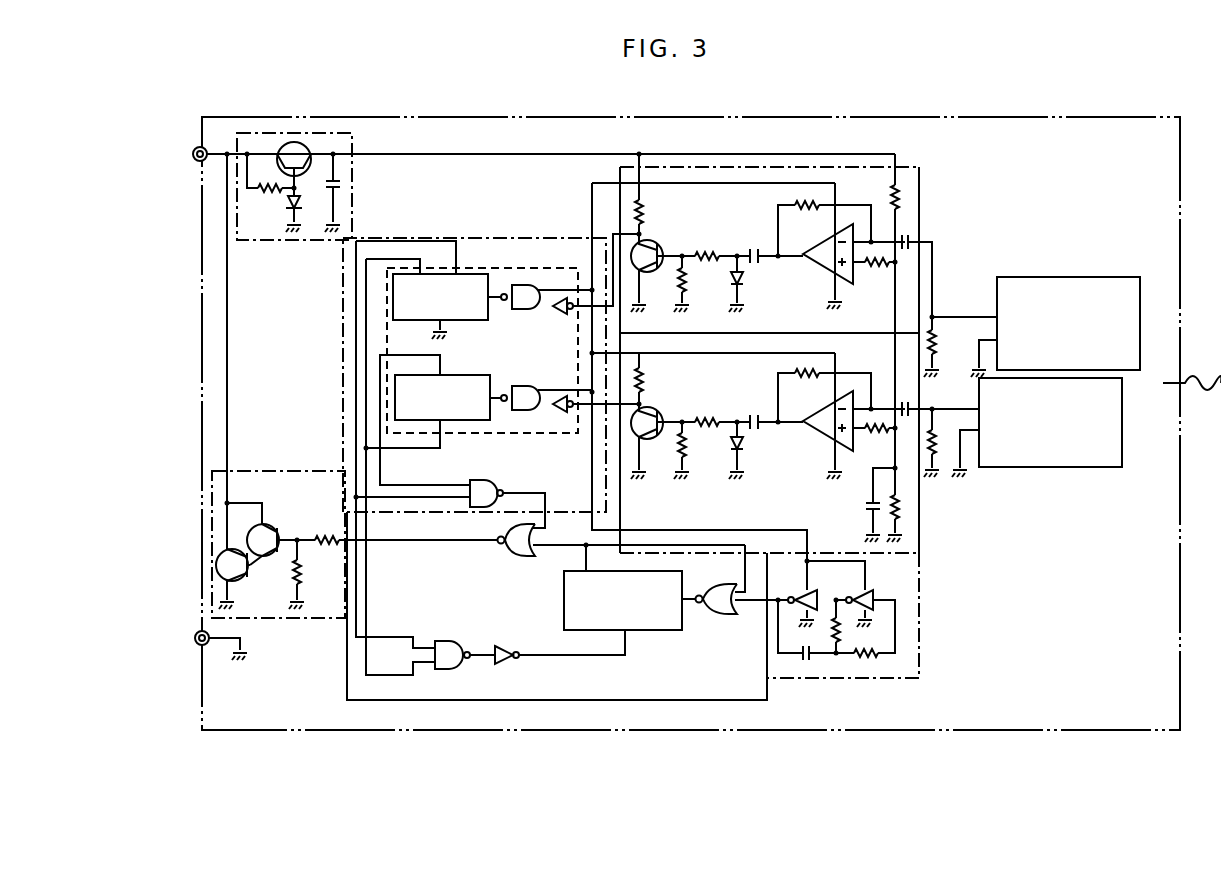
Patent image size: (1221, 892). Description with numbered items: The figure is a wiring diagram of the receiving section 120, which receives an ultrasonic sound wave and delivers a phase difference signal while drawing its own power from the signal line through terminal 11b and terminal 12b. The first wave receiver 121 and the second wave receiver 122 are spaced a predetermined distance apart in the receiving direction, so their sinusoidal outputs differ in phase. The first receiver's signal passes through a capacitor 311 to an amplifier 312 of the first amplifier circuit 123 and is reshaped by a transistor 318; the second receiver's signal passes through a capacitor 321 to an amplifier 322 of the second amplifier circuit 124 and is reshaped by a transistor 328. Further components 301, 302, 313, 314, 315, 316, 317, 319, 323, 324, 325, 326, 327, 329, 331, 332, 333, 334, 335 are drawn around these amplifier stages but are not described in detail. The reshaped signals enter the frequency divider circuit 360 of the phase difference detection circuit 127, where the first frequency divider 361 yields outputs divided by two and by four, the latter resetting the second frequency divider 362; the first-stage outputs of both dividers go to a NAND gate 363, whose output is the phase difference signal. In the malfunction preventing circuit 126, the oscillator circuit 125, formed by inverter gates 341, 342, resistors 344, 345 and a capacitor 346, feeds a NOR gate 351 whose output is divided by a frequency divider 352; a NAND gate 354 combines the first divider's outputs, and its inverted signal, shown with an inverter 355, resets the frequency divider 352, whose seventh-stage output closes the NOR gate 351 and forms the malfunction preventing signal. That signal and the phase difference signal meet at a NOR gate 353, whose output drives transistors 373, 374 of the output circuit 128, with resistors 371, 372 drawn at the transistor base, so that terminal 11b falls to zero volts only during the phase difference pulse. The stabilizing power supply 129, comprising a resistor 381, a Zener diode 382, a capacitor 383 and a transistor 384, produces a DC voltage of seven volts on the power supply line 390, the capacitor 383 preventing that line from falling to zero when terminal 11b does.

The terminal 11b is at (193, 152).
The ground terminal 12b is at (195, 643).
The receiving section 120 is at (1028, 116).
The first wave receiver 121 is at (1083, 277).
The second wave receiver 122 is at (1062, 467).
The first amplifier circuit 123 is at (902, 168).
The second amplifier circuit 124 is at (925, 538).
The oscillator circuit 125 is at (923, 597).
The malfunction preventing circuit 126 is at (577, 700).
The phase difference detection circuit 127 is at (342, 318).
The output circuit 128 is at (295, 470).
The stabilizing power supply 129 is at (265, 133).
The resistor 301 is at (937, 345).
The resistor 302 is at (939, 446).
The capacitor 311 is at (912, 243).
The amplifier 312 is at (811, 262).
The feedback resistor 313 is at (826, 228).
The capacitor 314 is at (757, 248).
The diode 315 is at (747, 284).
The resistor 316 is at (711, 255).
The resistor 317 is at (684, 286).
The transistor 318 is at (653, 247).
The resistor 319 is at (648, 212).
The capacitor 321 is at (911, 409).
The amplifier 322 is at (830, 406).
The feedback resistor 323 is at (799, 373).
The capacitor 324 is at (754, 426).
The diode 325 is at (744, 463).
The resistor 326 is at (712, 417).
The resistor 327 is at (686, 463).
The transistor 328 is at (652, 414).
The resistor 329 is at (644, 386).
The capacitor 331 is at (870, 509).
The resistor 332 is at (906, 514).
The resistor 333 is at (905, 190).
The resistor 334 is at (852, 272).
The resistor 335 is at (869, 430).
The inverter gate 341 is at (872, 595).
The inverter gate 342 is at (810, 594).
The resistor 344 is at (878, 658).
The resistor 345 is at (842, 645).
The capacitor 346 is at (807, 660).
The NOR gate 351 is at (717, 613).
The frequency divider 352 is at (652, 630).
The NOR gate 353 is at (515, 554).
The NAND gate 354 is at (453, 635).
The inverter 355 is at (503, 645).
The frequency divider circuit 360 is at (516, 268).
The first frequency divider 361 is at (474, 320).
The second frequency divider 362 is at (487, 394).
The NAND gate 363 is at (497, 475).
The resistor 371 is at (325, 536).
The resistor 372 is at (302, 570).
The transistor 373 is at (270, 524).
The transistor 374 is at (220, 555).
The resistor 381 is at (267, 191).
The Zener diode 382 is at (302, 227).
The capacitor 383 is at (339, 190).
The transistor 384 is at (300, 143).
The power supply line 390 is at (419, 156).